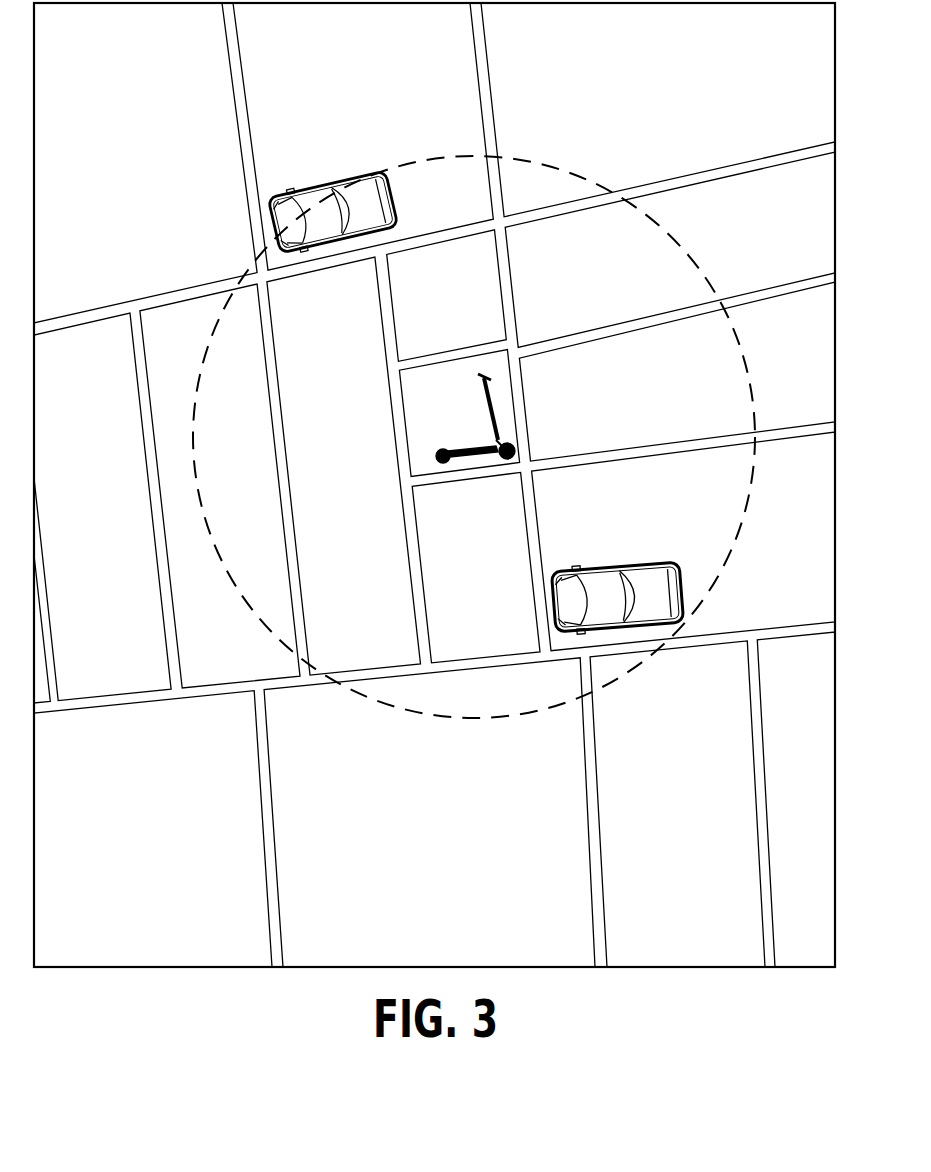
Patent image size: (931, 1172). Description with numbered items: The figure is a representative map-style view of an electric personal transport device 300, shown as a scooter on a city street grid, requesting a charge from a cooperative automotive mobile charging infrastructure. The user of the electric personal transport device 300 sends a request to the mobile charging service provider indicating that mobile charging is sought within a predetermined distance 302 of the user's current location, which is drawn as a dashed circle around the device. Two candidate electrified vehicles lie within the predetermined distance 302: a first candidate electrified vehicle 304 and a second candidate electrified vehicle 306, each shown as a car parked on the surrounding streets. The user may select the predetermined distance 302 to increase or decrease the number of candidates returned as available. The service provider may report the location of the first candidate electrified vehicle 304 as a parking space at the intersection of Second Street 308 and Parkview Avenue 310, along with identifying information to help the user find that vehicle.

The electric personal transport device 300 is at (492, 393).
The predetermined distance 302 is at (550, 166).
The first candidate electrified vehicle 304 is at (613, 563).
The second candidate electrified vehicle 306 is at (322, 185).
The Second Street 308 is at (541, 605).
The Parkview Avenue 310 is at (633, 650).